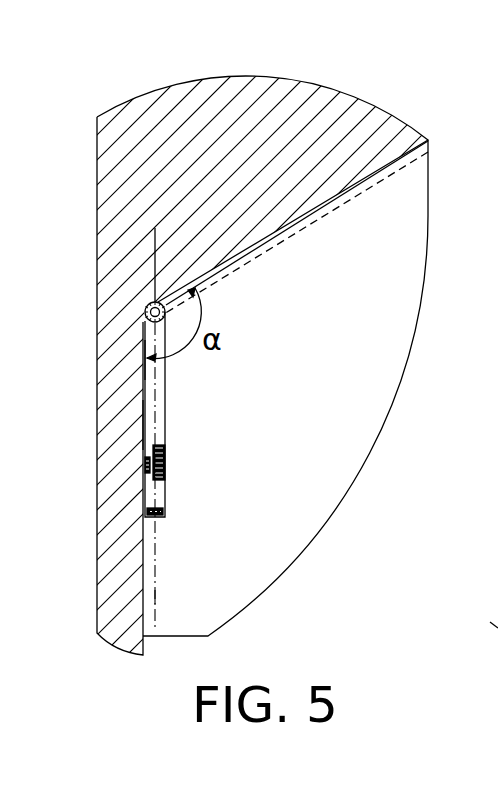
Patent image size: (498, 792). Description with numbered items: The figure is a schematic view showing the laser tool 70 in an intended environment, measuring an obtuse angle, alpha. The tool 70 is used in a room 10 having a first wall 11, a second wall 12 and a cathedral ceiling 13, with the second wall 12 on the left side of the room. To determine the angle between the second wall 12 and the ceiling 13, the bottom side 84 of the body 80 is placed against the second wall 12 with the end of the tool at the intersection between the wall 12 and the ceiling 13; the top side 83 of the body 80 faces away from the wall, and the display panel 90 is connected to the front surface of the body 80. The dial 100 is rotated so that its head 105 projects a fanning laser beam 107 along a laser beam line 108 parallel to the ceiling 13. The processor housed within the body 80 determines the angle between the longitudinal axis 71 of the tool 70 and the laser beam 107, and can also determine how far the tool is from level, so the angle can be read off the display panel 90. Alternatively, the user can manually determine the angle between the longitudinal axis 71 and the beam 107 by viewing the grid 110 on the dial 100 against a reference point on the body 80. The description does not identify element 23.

The room 10 is at (278, 78).
The cathedral ceiling 13 is at (430, 138).
The first wall 11 is at (382, 432).
The fanning laser beam 107 is at (257, 244).
The laser beam line 108 is at (315, 221).
The dial 100 is at (146, 314).
The grid 110 is at (149, 304).
The laser tool 70 is at (172, 402).
The head 105 is at (144, 357).
The bottom side 84 is at (141, 423).
The top side 83 is at (166, 433).
The display panel 90 is at (166, 465).
The body 80 is at (166, 498).
The second wall 12 is at (155, 558).
The longitudinal axis 71 is at (157, 597).
The housing portion 23 is at (490, 622).